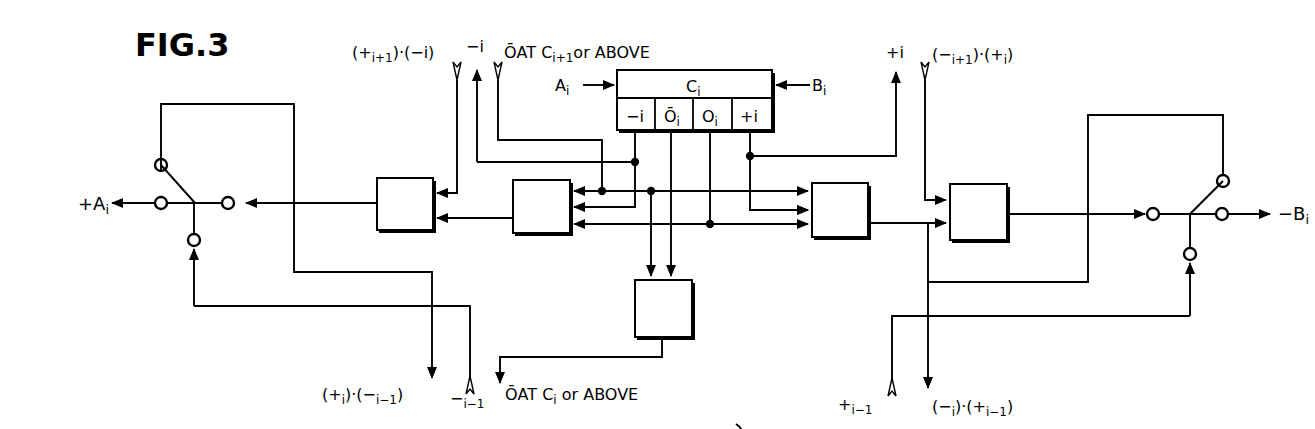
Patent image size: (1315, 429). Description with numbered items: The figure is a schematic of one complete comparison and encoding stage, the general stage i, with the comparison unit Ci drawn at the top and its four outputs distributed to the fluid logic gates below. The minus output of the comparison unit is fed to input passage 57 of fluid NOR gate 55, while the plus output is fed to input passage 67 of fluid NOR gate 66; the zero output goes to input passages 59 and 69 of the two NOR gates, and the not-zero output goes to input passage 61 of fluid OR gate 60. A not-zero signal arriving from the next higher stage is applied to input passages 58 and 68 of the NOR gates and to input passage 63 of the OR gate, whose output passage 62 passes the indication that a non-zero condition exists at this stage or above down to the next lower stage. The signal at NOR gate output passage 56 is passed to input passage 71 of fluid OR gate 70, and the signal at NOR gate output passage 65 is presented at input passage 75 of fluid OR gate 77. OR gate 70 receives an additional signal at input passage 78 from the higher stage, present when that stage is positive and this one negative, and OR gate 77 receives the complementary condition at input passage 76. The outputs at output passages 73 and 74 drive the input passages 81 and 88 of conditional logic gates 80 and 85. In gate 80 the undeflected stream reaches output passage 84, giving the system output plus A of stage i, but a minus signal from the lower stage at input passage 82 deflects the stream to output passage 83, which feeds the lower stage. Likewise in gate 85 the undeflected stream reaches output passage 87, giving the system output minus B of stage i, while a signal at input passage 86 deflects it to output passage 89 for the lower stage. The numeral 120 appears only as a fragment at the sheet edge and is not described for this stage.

The fluid NOR gate 55 is at (543, 234).
The output passage 56 is at (474, 222).
The input passage 57 is at (590, 214).
The input passage 58 is at (586, 190).
The input passage 59 is at (584, 229).
The fluid OR gate 60 is at (696, 320).
The input passage 61 is at (676, 272).
The output passage 62 is at (574, 356).
The input passage 63 is at (648, 272).
The output passage 65 is at (884, 221).
The fluid NOR gate 66 is at (846, 240).
The input passage 67 is at (804, 216).
The input passage 68 is at (804, 191).
The input passage 69 is at (808, 230).
The fluid OR gate 70 is at (386, 176).
The input passage 71 is at (443, 222).
The output passage 73 is at (335, 186).
The output passage 74 is at (1040, 216).
The input passage 75 is at (930, 236).
The input passage 76 is at (932, 196).
The fluid OR gate 77 is at (986, 184).
The input passage 78 is at (450, 188).
The conditional logic gate 80 is at (180, 184).
The input passage 81 is at (232, 210).
The input passage 82 is at (189, 247).
The output passage 83 is at (155, 161).
The output passage 84 is at (158, 211).
The conditional logic gate 85 is at (1202, 204).
The input passage 86 is at (1196, 260).
The output passage 87 is at (1222, 221).
The input passage 88 is at (1150, 221).
The output passage 89 is at (1229, 180).
The register (partial, next figure) 120 is at (723, 423).